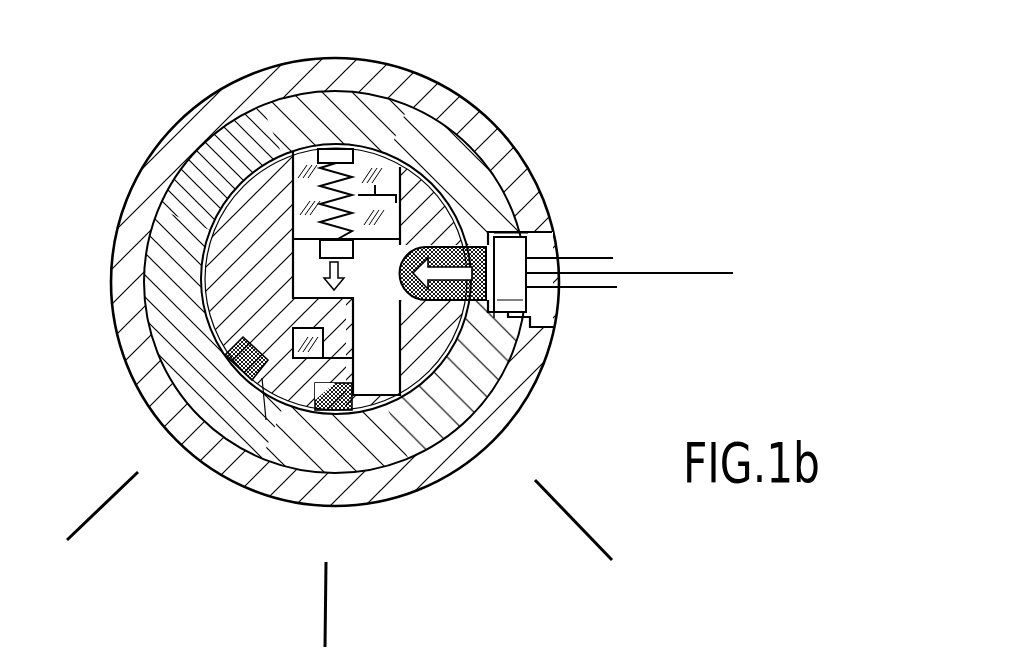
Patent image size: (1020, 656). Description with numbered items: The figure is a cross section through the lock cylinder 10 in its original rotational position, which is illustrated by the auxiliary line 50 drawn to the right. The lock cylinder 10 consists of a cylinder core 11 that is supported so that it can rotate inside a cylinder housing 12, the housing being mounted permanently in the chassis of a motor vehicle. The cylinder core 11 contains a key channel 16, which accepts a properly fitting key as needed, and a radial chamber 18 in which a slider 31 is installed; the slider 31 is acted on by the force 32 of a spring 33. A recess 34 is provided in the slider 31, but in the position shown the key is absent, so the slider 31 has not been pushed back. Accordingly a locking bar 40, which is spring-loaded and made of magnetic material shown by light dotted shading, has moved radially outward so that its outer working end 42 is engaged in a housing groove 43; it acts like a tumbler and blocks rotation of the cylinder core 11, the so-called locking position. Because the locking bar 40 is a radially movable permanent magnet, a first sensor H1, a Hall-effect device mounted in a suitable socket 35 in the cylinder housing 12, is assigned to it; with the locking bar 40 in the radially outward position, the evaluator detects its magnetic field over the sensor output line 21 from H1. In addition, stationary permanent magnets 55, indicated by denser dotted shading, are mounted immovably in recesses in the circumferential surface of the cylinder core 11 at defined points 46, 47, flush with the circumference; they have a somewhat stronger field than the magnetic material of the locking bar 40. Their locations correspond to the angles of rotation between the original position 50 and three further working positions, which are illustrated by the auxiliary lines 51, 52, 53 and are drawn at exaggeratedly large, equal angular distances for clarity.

The lock cylinder 10 is at (320, 253).
The cylinder core 11 is at (253, 193).
The cylinder housing 12 is at (237, 137).
The key channel 16 is at (313, 308).
The radial chamber 18 is at (375, 280).
The sensor output line 21 is at (617, 273).
The slider 31 is at (400, 167).
The spring force 32 is at (320, 267).
The spring 33 is at (307, 210).
The recess 34 is at (390, 415).
The socket 35 is at (520, 235).
The locking bar 40 is at (510, 362).
The working end 42 is at (477, 260).
The housing groove 43 is at (513, 340).
The defined point 46 is at (227, 377).
The defined point 47 is at (325, 412).
The auxiliary line 50 is at (678, 273).
The auxiliary line 51 is at (600, 542).
The auxiliary line 52 is at (328, 602).
The auxiliary line 53 is at (98, 512).
The permanent magnets 55 is at (264, 422).
The first sensor H1 is at (507, 288).